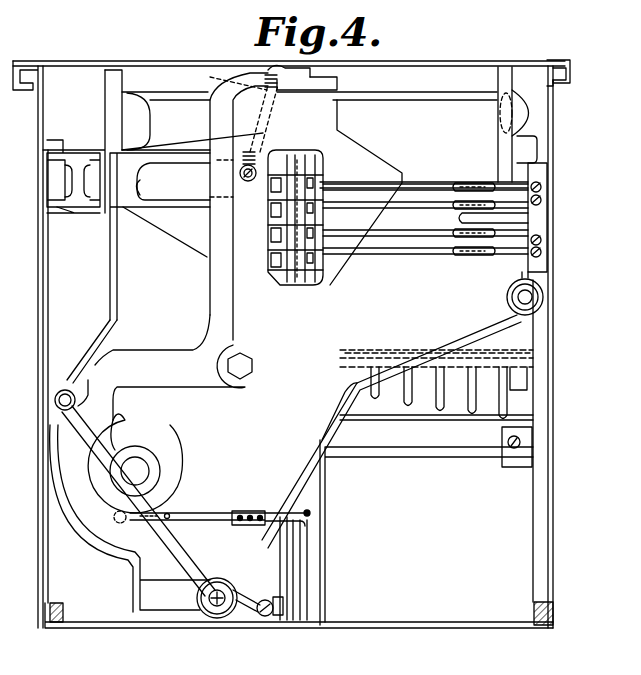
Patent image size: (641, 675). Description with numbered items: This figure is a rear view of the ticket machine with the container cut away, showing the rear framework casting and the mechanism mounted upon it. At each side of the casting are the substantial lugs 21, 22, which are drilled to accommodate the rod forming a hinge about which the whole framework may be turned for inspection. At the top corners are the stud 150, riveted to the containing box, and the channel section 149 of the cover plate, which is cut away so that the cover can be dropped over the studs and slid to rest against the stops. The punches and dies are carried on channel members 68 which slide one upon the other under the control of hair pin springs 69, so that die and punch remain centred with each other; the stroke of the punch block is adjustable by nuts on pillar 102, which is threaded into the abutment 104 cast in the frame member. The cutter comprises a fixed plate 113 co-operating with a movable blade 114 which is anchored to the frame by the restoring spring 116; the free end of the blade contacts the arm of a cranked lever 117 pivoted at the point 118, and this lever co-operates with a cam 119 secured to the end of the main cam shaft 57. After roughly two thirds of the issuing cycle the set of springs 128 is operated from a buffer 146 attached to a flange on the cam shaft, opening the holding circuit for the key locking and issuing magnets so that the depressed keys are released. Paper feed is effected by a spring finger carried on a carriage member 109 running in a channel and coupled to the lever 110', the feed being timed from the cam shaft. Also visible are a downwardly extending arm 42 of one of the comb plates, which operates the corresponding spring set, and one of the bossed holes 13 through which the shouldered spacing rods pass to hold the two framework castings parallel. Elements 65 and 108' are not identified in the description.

The supporting lug 22 is at (107, 84).
The supporting lug 21 is at (499, 79).
The stud 150 is at (571, 71).
The channel section 149 is at (573, 84).
The movable blade 114 is at (285, 72).
The fixed plate 113 is at (305, 86).
The restoring spring 116 is at (262, 134).
The switch block 65 is at (293, 168).
The channel member 68 is at (272, 222).
The hair pin spring 69 is at (366, 186).
The pillar 102 is at (50, 196).
The abutment 104 is at (140, 203).
The cranked lever 117 is at (210, 321).
The pivot point 118 is at (244, 370).
The cam 119 is at (135, 431).
The cam shaft 57 is at (150, 470).
The buffer 146 is at (120, 516).
The set of springs 128 is at (208, 516).
The downwardly extending arm 42 is at (500, 395).
The lever 108' is at (267, 568).
The hole 13 is at (215, 597).
The lever 110' is at (250, 621).
The carriage member 109 is at (277, 618).